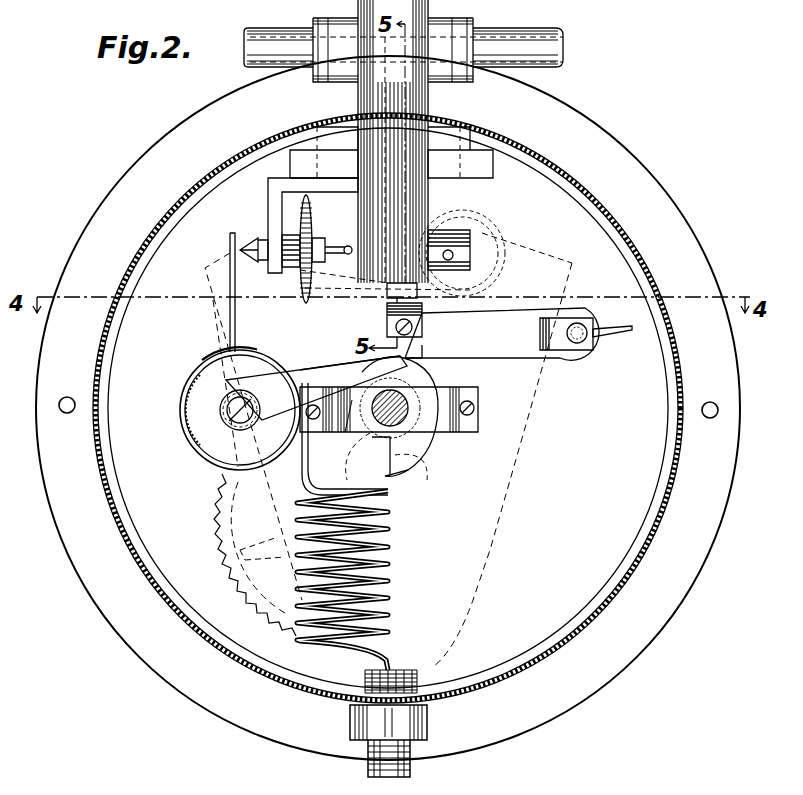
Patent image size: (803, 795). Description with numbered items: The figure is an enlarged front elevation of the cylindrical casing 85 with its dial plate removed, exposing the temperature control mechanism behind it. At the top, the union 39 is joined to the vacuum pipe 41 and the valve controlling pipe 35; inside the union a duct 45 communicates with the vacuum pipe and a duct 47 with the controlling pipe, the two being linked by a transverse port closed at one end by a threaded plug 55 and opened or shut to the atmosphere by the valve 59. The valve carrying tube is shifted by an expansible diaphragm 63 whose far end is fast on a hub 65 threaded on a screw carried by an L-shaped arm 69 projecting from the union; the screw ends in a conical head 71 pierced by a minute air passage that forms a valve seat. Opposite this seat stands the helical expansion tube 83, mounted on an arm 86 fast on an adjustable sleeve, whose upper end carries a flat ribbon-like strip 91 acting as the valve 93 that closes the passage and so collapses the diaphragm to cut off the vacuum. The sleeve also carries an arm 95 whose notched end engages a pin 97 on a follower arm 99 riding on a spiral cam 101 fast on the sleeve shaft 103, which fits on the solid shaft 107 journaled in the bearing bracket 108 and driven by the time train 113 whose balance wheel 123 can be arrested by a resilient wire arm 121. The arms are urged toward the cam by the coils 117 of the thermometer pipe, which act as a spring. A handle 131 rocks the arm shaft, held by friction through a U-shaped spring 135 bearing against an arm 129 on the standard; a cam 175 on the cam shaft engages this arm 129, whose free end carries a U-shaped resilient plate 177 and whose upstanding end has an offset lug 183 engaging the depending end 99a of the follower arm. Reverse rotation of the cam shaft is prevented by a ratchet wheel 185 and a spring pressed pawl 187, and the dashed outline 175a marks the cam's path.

The valve controlling pipe 35 is at (268, 34).
The union 39 is at (446, 27).
The vacuum pipe 41 is at (541, 40).
The duct 45 is at (428, 98).
The duct 47 is at (376, 100).
The plug 55 is at (482, 260).
The valve 59 is at (332, 262).
The expansible diaphragm 63 is at (310, 216).
The hub 65 is at (290, 268).
The L-shaped arm 69 is at (268, 192).
The conical head 71 is at (250, 246).
The helical expansion tube 83 is at (203, 453).
The cylindrical casing 85 is at (660, 624).
The arm 86 is at (250, 346).
The flat ribbon-like strip 91 is at (237, 311).
The valve 93 is at (229, 242).
The arm 95 is at (316, 375).
The pin 97 is at (303, 406).
The follower arm 99 is at (340, 367).
The depending end 99a is at (433, 344).
The spiral cam 101 is at (398, 480).
The sleeve shaft 103 is at (422, 446).
The solid shaft 107 is at (410, 420).
The bearing bracket 108 is at (478, 421).
The time train 113 is at (213, 548).
The coils 117 is at (390, 620).
The arm 121 is at (492, 300).
The balance wheel 123 is at (485, 222).
The arm 129 is at (519, 360).
The handle 131 is at (610, 337).
The U-shaped spring 135 is at (565, 352).
The cam 175 is at (502, 465).
The sector outline 175a is at (387, 458).
The U-shaped resilient ribbon-like plate 177 is at (420, 322).
The offset lug 183 is at (386, 326).
The ratchet wheel 185 is at (362, 445).
The spring pressed pawl 187 is at (332, 420).